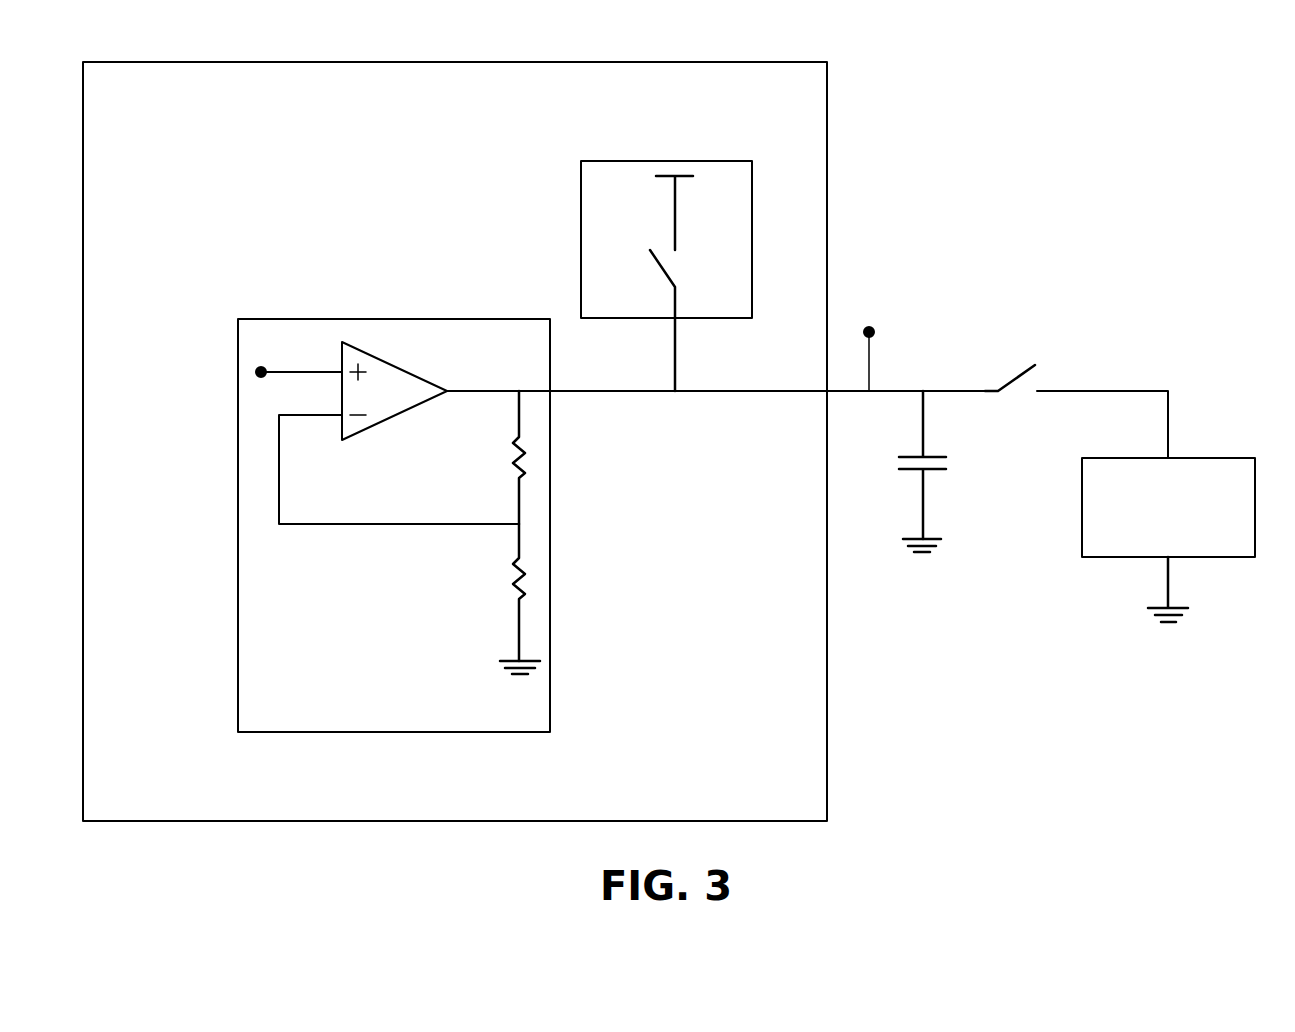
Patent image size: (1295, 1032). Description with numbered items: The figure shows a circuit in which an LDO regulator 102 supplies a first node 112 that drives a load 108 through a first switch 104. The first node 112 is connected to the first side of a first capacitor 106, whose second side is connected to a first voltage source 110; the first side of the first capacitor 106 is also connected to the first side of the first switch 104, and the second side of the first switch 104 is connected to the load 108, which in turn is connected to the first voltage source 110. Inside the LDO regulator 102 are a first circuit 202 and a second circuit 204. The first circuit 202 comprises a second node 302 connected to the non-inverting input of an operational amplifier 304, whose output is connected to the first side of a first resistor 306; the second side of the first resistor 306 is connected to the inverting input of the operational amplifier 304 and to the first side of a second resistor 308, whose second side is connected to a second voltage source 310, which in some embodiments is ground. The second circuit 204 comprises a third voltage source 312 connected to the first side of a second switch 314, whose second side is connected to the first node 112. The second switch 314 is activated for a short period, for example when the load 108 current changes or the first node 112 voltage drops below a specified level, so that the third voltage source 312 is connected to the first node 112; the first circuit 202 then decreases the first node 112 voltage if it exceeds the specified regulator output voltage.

The LDO regulator 102 is at (392, 62).
The first switch 104 is at (1012, 378).
The first capacitor 106 is at (943, 455).
The load 108 is at (1195, 458).
The first voltage source 110 is at (915, 555).
The first node 112 is at (869, 332).
The first circuit 202 is at (417, 319).
The second circuit 204 is at (581, 237).
The second node 302 is at (261, 372).
The operational amplifier 304 is at (387, 417).
The first resistor 306 is at (527, 460).
The second resistor 308 is at (527, 582).
The second voltage source 310 is at (519, 674).
The third voltage source 312 is at (683, 176).
The second switch 314 is at (662, 272).